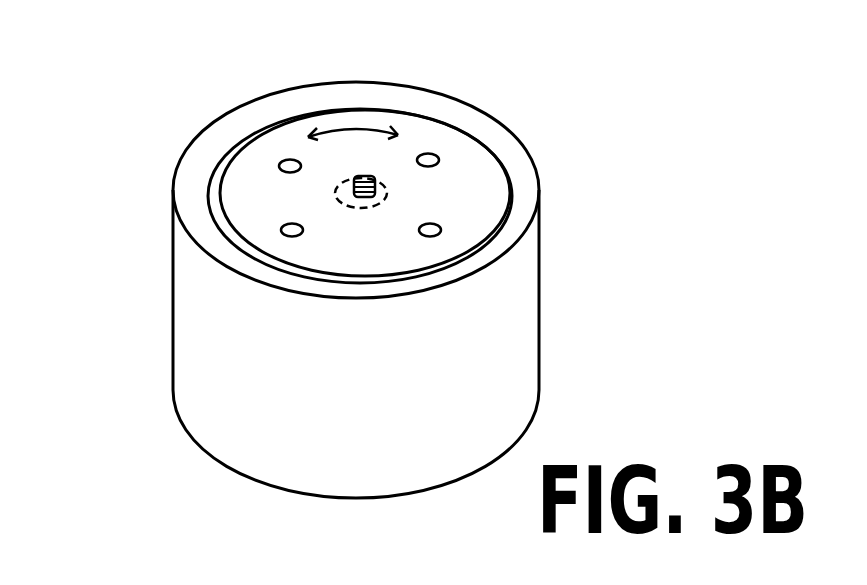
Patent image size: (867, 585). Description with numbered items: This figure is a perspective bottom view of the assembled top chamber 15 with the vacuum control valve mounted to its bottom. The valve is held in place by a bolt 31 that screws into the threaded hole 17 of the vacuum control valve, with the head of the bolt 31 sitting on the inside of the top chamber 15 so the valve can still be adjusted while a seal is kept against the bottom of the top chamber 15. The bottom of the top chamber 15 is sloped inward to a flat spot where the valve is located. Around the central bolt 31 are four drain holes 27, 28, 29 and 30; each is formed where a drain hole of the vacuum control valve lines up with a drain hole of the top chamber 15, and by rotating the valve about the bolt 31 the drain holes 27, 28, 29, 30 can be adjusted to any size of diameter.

The top chamber 15 is at (215, 173).
The threaded hole 17 is at (353, 193).
The drain hole 27 is at (290, 159).
The drain hole 28 is at (431, 154).
The drain hole 29 is at (284, 236).
The drain hole 30 is at (441, 232).
The bolt 31 is at (375, 178).